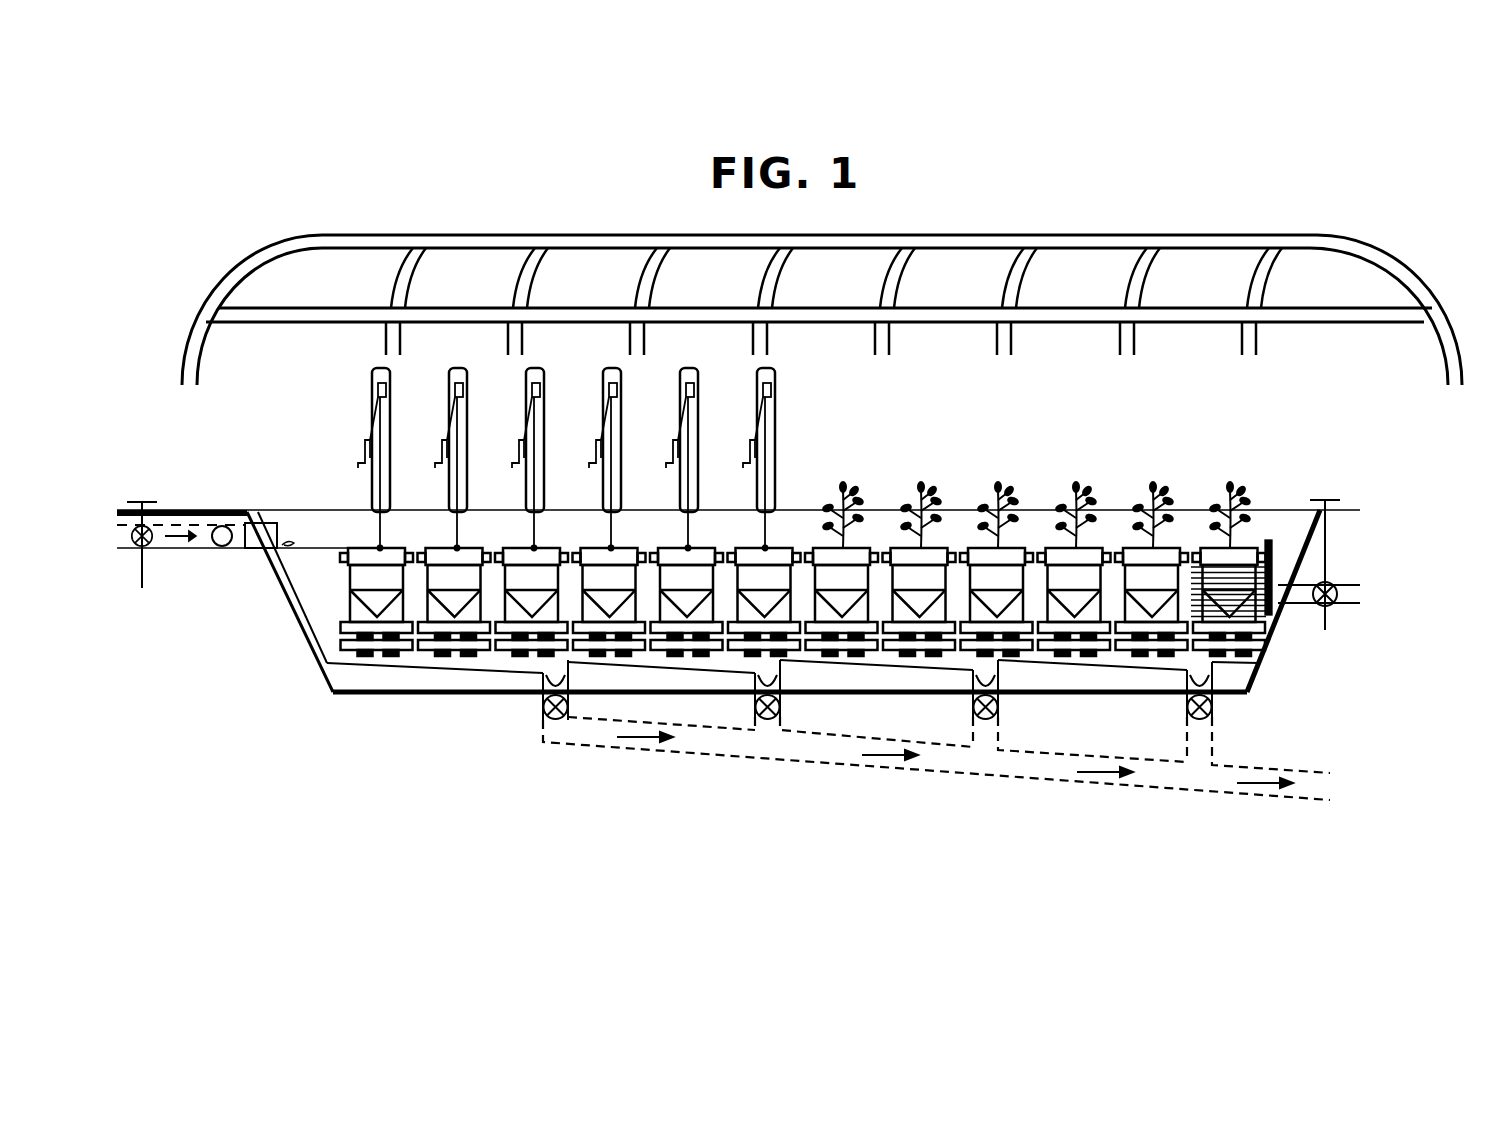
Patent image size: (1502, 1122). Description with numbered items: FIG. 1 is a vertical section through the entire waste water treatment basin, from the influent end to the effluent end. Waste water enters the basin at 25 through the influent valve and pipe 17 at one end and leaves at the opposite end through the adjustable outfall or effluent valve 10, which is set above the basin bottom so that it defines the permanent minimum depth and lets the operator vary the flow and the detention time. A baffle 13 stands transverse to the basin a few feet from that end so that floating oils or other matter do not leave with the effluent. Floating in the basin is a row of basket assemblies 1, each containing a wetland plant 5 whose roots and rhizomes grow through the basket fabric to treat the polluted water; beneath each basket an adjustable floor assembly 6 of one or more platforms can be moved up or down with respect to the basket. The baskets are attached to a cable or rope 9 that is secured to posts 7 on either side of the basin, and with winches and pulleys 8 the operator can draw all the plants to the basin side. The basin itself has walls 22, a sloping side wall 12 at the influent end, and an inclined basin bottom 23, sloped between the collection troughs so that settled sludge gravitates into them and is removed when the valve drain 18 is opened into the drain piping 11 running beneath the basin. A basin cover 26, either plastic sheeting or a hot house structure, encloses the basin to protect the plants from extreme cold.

The basket assembly 1 is at (1170, 548).
The wetland plant 5 is at (984, 482).
The adjustable floor assembly 6 is at (913, 640).
The posts 7 is at (768, 368).
The winches and pulleys 8 is at (752, 446).
The cable or rope 9 is at (765, 530).
The effluent valve 10 is at (1319, 583).
The drain piping 11 is at (752, 758).
The tank wall 12 is at (300, 627).
The baffle 13 is at (1270, 540).
The influent valve and pipe 17 is at (181, 562).
The valve drain 18 is at (543, 705).
The walls 22 is at (1265, 650).
The basin bottom 23 is at (423, 697).
The waste water entry point 25 is at (287, 524).
The basin cover 26 is at (235, 268).